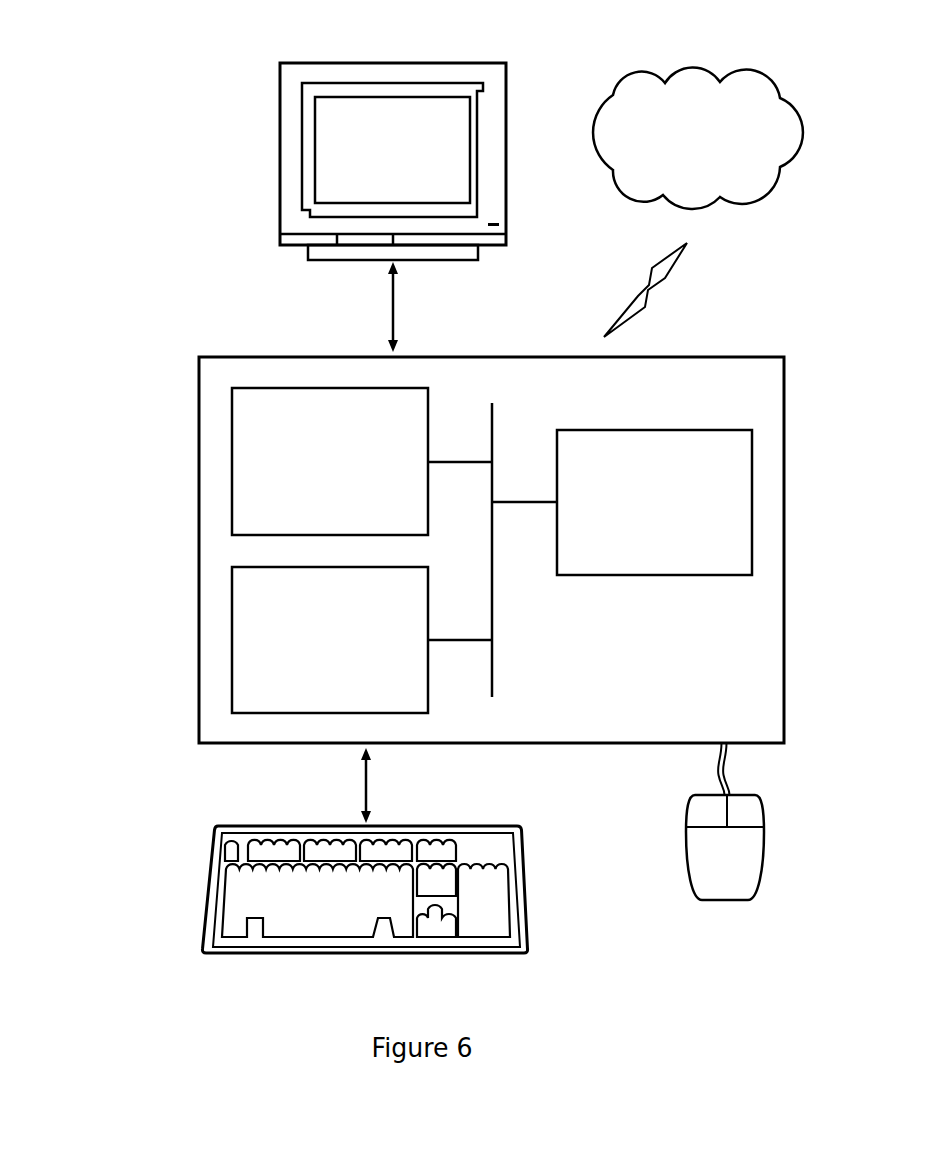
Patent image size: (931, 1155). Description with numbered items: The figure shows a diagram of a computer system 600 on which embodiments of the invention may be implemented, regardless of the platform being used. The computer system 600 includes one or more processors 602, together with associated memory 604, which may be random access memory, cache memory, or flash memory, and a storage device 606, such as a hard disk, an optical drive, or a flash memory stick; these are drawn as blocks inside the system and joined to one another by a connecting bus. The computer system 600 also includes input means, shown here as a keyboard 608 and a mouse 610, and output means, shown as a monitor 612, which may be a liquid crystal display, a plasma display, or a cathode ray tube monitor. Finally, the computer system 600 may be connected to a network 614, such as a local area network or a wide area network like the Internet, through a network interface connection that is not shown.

The computer system 600 is at (170, 251).
The processor 602 is at (636, 526).
The memory 604 is at (309, 486).
The storage device 606 is at (309, 664).
The keyboard 608 is at (298, 930).
The mouse 610 is at (706, 882).
The monitor 612 is at (374, 168).
The network 614 is at (679, 162).